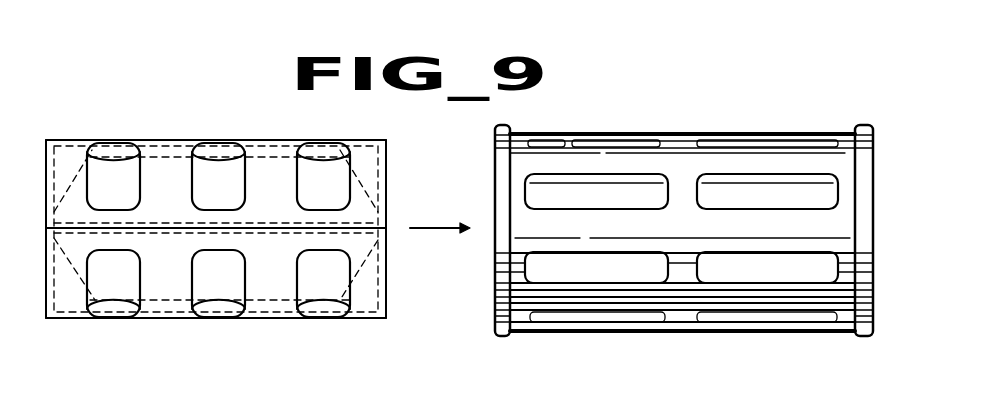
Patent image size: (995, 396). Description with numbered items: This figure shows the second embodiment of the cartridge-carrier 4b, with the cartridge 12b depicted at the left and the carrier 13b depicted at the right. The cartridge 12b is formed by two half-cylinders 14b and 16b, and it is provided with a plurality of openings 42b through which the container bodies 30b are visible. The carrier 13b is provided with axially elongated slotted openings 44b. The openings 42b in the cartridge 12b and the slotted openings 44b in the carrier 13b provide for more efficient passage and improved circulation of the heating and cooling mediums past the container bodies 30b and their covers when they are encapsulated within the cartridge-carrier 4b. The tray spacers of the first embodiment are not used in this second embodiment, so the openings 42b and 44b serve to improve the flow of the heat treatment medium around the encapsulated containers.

The cartridge-carrier 4b is at (689, 212).
The cartridge 12b is at (385, 138).
The carrier 13b is at (674, 132).
The half-cylinder 14b is at (64, 140).
The half-cylinder 16b is at (358, 318).
The container body 30b is at (323, 150).
The openings 42b is at (200, 146).
The slotted openings 44b is at (582, 136).